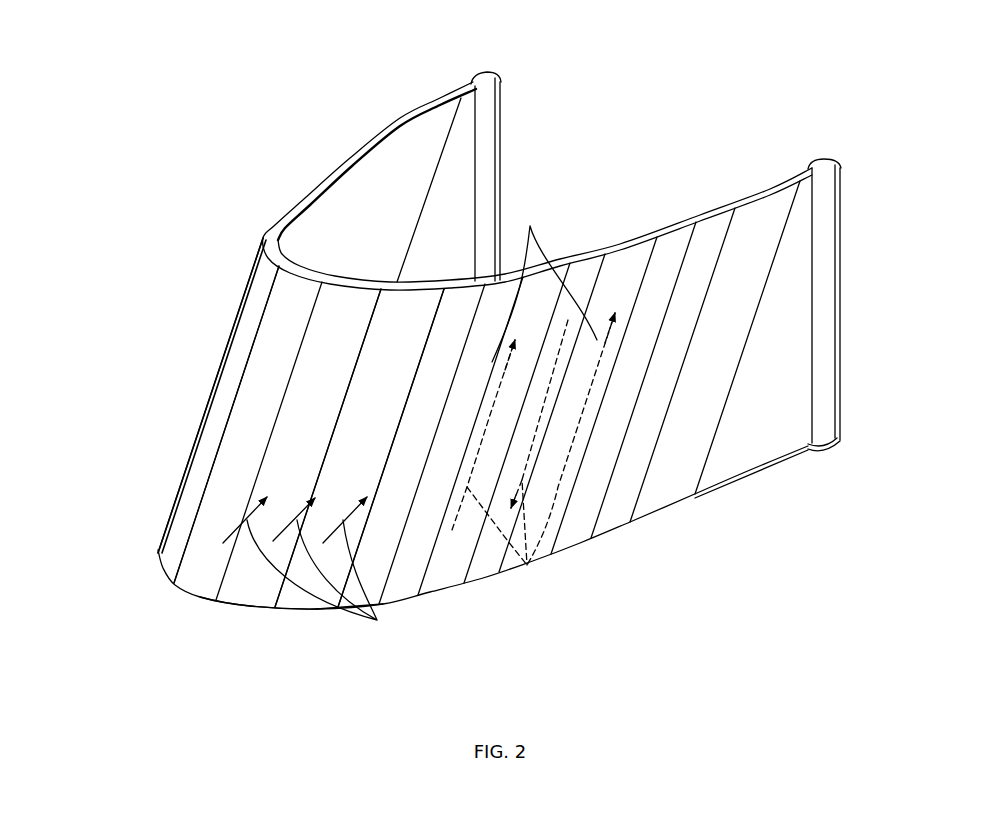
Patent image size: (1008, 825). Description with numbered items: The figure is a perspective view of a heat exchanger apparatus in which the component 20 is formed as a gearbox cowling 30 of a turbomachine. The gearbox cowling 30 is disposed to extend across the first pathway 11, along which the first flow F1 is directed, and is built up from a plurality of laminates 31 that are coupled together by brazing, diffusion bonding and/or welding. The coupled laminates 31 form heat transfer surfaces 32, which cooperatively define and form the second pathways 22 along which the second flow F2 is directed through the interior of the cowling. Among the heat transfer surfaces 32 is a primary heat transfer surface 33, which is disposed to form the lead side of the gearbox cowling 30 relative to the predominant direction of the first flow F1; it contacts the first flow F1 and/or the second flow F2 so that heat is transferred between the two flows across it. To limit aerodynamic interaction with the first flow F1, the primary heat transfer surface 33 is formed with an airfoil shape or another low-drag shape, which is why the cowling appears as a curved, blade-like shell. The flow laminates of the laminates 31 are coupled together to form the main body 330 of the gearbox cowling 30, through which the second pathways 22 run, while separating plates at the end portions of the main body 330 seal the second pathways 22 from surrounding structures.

The component 20 is at (236, 72).
The second pathway 22 is at (530, 230).
The gearbox cowling 30 is at (462, 599).
The laminates 31 is at (202, 204).
The heat transfer surfaces 32 is at (431, 424).
The primary heat transfer surface 33 is at (323, 593).
The main body 330 is at (248, 234).
The first pathway 11 is at (185, 610).
The first flow F1 is at (377, 620).
The second flow F2 is at (527, 565).